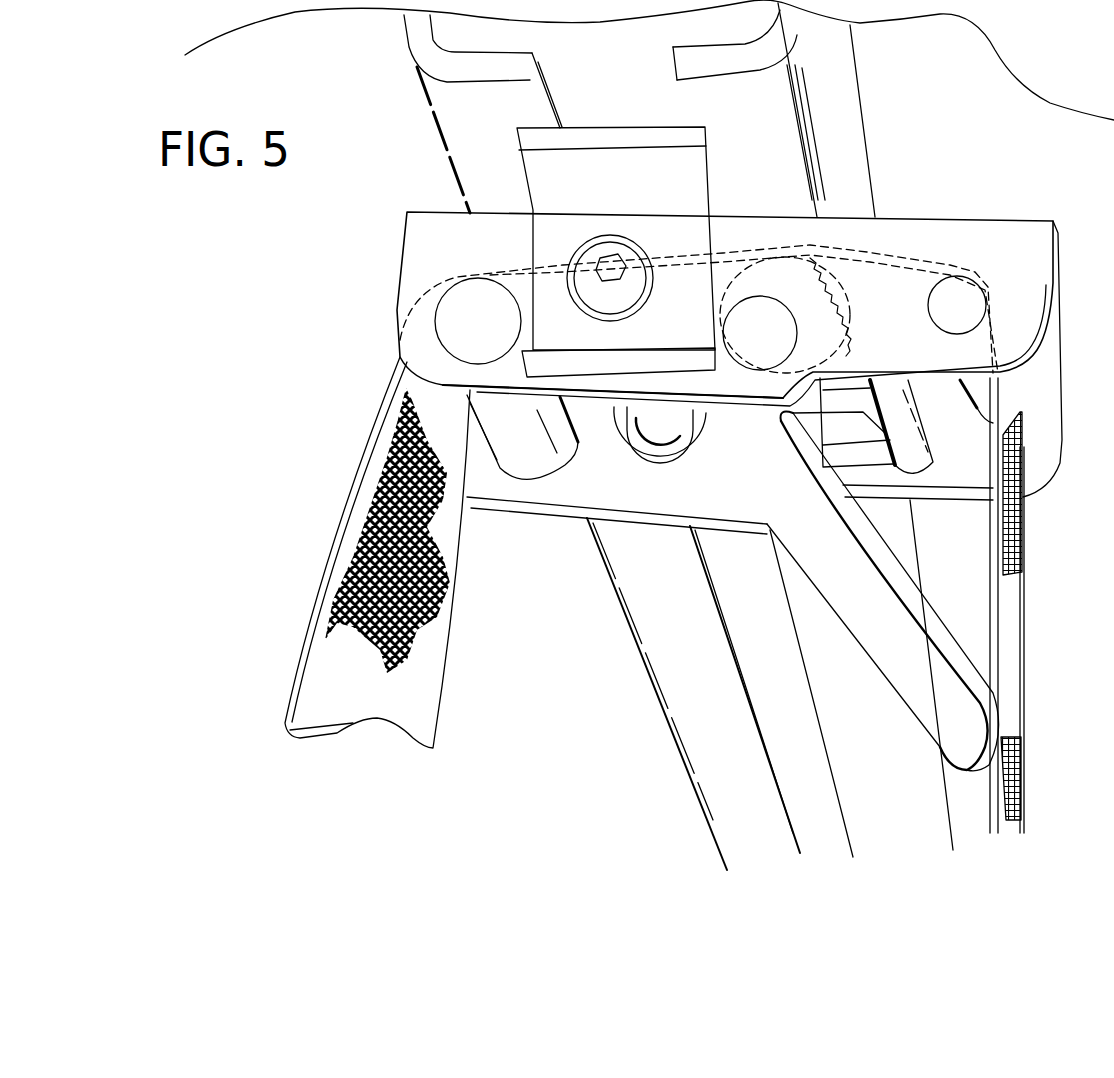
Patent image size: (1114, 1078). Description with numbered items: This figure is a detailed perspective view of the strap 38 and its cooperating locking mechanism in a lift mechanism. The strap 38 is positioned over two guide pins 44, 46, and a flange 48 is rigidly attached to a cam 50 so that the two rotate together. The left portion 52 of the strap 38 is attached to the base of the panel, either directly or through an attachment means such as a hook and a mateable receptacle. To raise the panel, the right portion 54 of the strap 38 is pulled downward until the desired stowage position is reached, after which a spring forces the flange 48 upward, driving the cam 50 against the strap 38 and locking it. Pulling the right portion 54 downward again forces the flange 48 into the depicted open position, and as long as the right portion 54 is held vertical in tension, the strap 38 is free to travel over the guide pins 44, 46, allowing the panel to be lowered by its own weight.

The strap 38 is at (348, 701).
The guide pin 44 is at (453, 318).
The guide pin 46 is at (960, 297).
The flange 48 is at (923, 677).
The cam 50 is at (820, 303).
The left portion of the strap 52 is at (322, 578).
The right portion of the strap 54 is at (1027, 562).